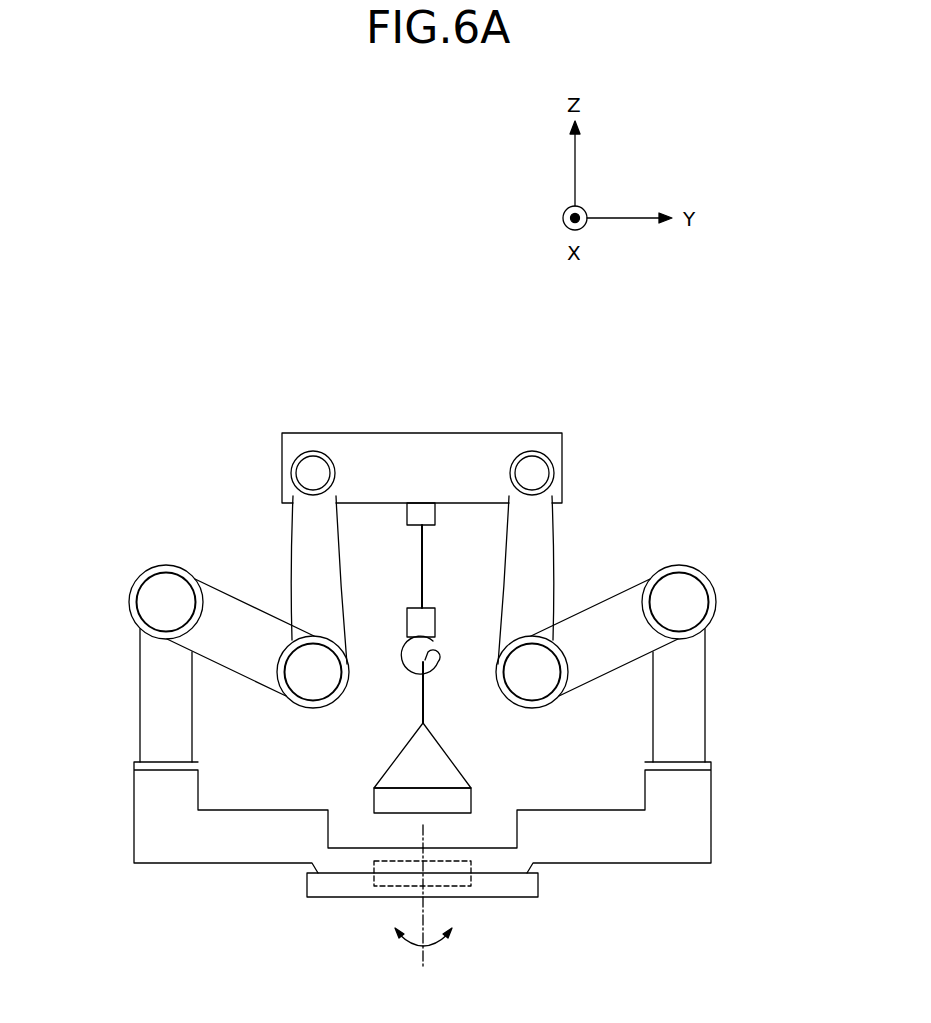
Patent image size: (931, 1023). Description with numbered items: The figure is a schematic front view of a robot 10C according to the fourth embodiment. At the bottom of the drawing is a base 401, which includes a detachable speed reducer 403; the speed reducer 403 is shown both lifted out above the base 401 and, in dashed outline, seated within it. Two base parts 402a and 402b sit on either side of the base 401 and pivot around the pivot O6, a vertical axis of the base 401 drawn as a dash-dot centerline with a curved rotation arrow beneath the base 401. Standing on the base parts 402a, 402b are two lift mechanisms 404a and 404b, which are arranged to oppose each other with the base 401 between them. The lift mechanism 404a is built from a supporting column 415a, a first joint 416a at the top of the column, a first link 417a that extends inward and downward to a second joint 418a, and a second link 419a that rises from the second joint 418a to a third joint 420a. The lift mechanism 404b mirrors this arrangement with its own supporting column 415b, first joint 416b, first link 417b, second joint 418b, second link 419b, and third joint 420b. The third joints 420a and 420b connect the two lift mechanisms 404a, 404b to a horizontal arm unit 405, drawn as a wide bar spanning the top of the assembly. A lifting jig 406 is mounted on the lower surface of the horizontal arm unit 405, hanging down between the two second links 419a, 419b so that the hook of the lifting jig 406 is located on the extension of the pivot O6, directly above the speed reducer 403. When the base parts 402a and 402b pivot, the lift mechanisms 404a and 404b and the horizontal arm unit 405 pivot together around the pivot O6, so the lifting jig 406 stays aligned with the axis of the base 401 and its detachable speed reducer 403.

The robot 10C is at (226, 250).
The horizontal arm unit 405 is at (420, 415).
The third joint 420a is at (313, 478).
The third joint 420b is at (535, 478).
The second link 419a is at (300, 541).
The second link 419b is at (545, 541).
The lifting jig 406 is at (438, 602).
The lift mechanism 404a is at (120, 563).
The lift mechanism 404b is at (750, 537).
The first joint 416a is at (152, 604).
The first joint 416b is at (693, 604).
The first link 417a is at (226, 657).
The first link 417b is at (619, 657).
The second joint 418a is at (310, 688).
The second joint 418b is at (535, 688).
The supporting column 415a is at (152, 692).
The supporting column 415b is at (690, 692).
The base part 402a is at (226, 858).
The base part 402b is at (627, 858).
The base 401 is at (325, 888).
The speed reducer 403 is at (462, 802).
The pivot O6 is at (423, 911).